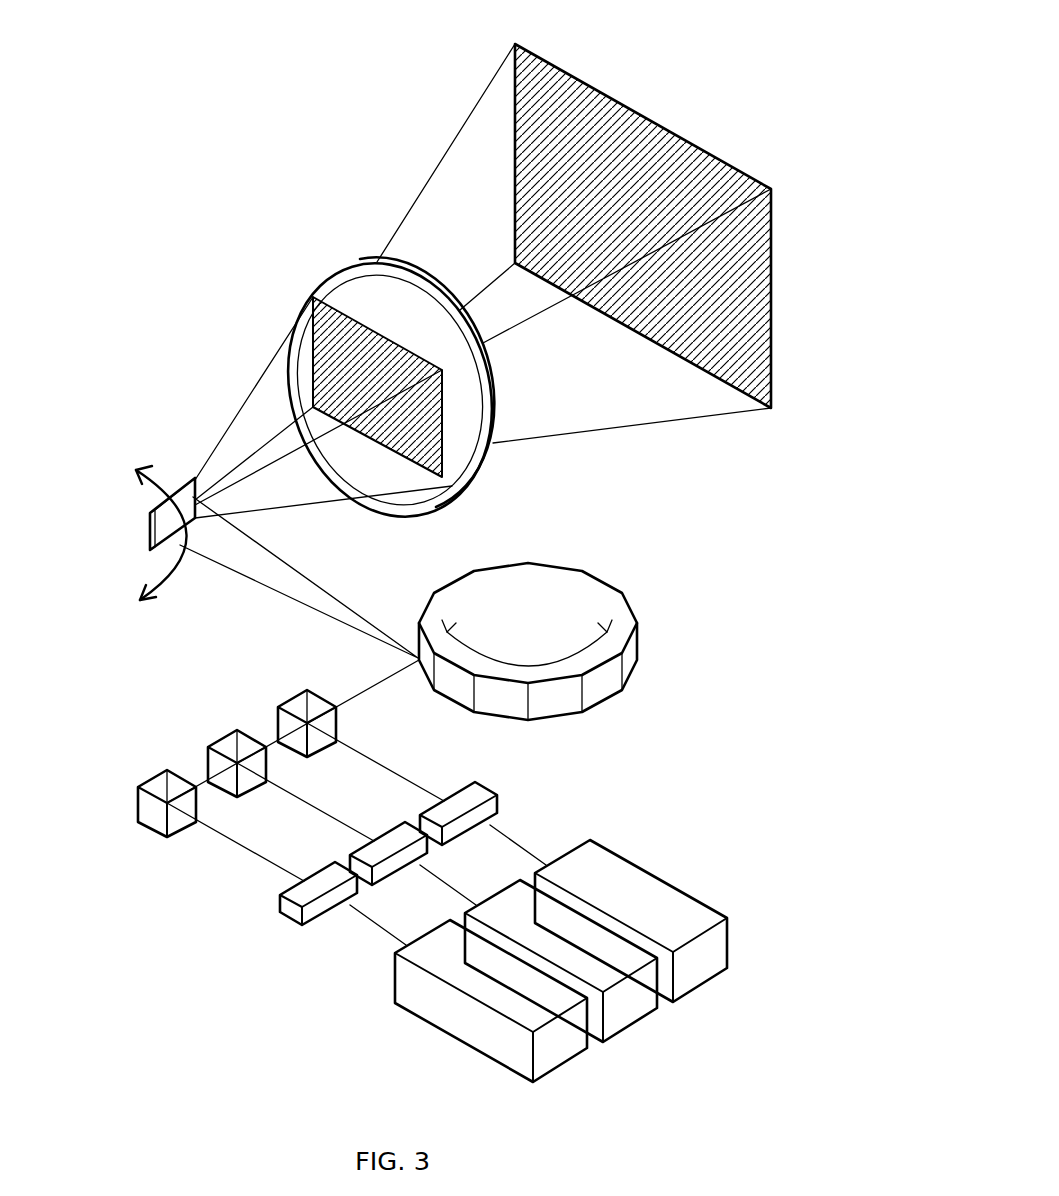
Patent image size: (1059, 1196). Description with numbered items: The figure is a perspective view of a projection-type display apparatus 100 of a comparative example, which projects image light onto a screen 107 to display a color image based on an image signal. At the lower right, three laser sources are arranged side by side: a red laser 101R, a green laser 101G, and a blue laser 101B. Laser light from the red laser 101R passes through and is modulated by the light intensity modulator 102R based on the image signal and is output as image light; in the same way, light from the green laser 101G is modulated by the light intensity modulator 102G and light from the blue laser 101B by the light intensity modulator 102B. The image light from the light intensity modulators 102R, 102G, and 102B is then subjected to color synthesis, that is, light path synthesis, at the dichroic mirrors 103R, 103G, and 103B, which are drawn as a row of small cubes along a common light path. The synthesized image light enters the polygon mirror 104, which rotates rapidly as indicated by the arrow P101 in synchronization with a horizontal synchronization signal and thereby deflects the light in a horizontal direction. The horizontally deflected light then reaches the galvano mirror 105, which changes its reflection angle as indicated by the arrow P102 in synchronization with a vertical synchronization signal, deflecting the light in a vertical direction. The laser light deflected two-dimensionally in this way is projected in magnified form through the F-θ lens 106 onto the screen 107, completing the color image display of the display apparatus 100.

The display apparatus 100 is at (178, 970).
The red laser 101R is at (560, 1050).
The green laser 101G is at (628, 1010).
The blue laser 101B is at (698, 970).
The light intensity modulator 102R is at (317, 905).
The light intensity modulator 102G is at (388, 867).
The light intensity modulator 102B is at (458, 825).
The dichroic mirror 103R is at (152, 772).
The dichroic mirror 103G is at (223, 733).
The dichroic mirror 103B is at (293, 693).
The polygon mirror 104 is at (560, 567).
The arrow P101 is at (547, 668).
The galvano mirror 105 is at (148, 533).
The arrow P102 is at (160, 490).
The F-θ lens 106 is at (330, 267).
The screen 107 is at (643, 113).